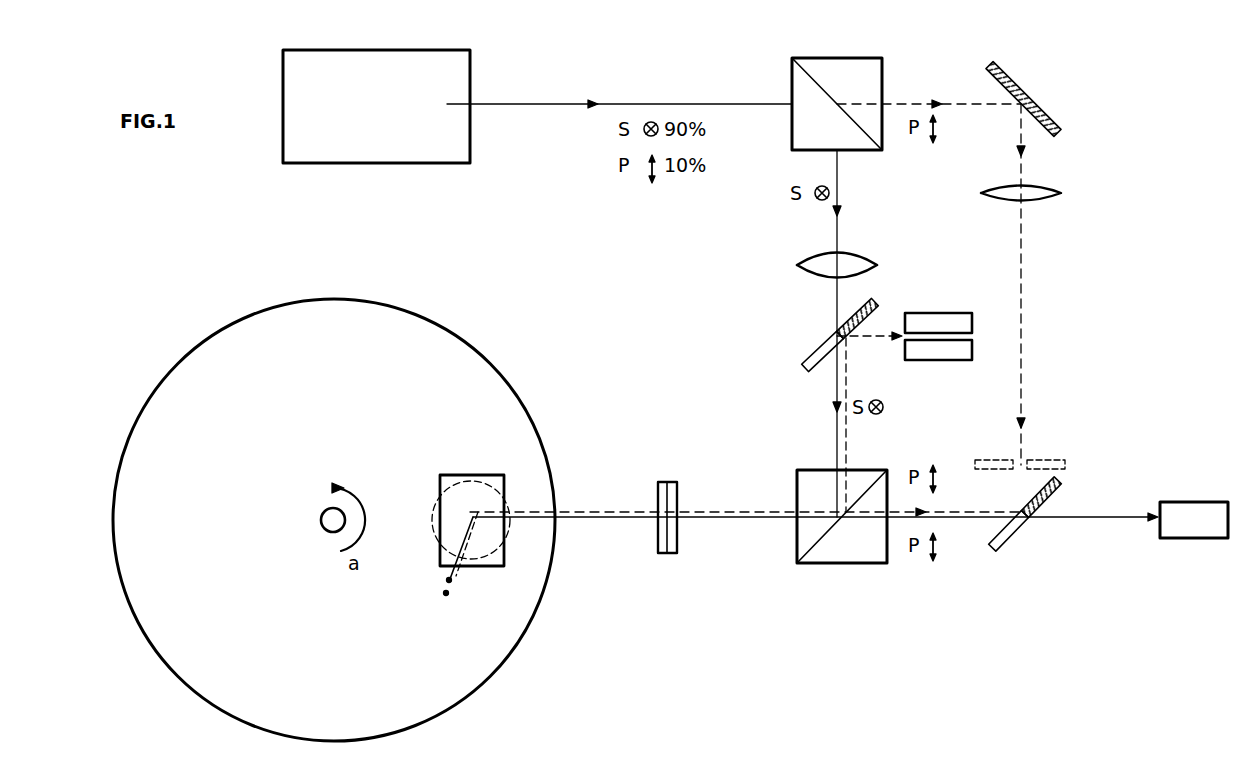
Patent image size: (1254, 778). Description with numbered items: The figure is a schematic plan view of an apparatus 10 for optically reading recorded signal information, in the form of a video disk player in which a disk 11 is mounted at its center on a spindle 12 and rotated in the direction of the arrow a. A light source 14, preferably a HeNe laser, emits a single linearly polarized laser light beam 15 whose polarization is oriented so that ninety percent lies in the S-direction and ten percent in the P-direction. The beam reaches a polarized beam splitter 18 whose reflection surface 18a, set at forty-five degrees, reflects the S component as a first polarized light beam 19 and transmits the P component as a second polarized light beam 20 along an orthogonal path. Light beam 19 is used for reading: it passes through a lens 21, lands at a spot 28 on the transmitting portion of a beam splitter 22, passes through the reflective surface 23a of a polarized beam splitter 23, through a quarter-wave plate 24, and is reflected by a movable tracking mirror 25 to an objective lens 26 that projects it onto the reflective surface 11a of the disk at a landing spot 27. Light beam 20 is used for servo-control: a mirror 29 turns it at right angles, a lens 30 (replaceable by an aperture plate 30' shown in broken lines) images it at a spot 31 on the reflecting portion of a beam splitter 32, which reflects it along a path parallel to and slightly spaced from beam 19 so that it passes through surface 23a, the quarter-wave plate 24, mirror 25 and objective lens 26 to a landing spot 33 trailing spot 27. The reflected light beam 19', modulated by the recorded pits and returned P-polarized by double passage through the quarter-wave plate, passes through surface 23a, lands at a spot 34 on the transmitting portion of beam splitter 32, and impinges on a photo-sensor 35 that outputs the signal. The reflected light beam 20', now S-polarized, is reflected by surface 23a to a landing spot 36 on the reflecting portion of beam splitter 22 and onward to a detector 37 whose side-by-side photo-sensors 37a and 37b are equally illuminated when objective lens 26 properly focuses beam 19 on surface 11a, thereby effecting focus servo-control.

The apparatus 10 is at (1124, 286).
The disk 11 is at (346, 501).
The reflective surface 11a is at (516, 438).
The spindle 12 is at (321, 525).
The light source 14 is at (373, 66).
The laser light beam 15 is at (613, 104).
The polarized beam splitter 18 is at (859, 86).
The reflection surface 18a is at (816, 78).
The first polarized laser light beam 19 is at (737, 333).
The reflected light beam 19' is at (815, 532).
The second polarized laser light beam 20 is at (765, 291).
The reflected light beam 20' is at (721, 496).
The lens 21 is at (876, 264).
The beam splitter 22 is at (848, 324).
The polarized beam splitter 23 is at (822, 534).
The reflective surface 23a is at (815, 545).
The quarter-wave plate 24 is at (662, 553).
The tracking mirror 25 is at (454, 478).
The objective lens 26 is at (440, 517).
The landing spot 27 is at (446, 580).
The spot 28 is at (832, 330).
The mirror 29 is at (1038, 110).
The lens 30 is at (1043, 193).
The aperture plate 30' is at (1020, 446).
The spot 31 is at (1016, 508).
The beam splitter 32 is at (1039, 522).
The landing spot 33 is at (444, 594).
The spot 34 is at (1012, 512).
The photo-sensor 35 is at (1198, 538).
The landing spot 36 is at (850, 338).
The detector 37 is at (983, 336).
The photo-sensor 37a is at (948, 313).
The photo-sensor 37b is at (958, 360).